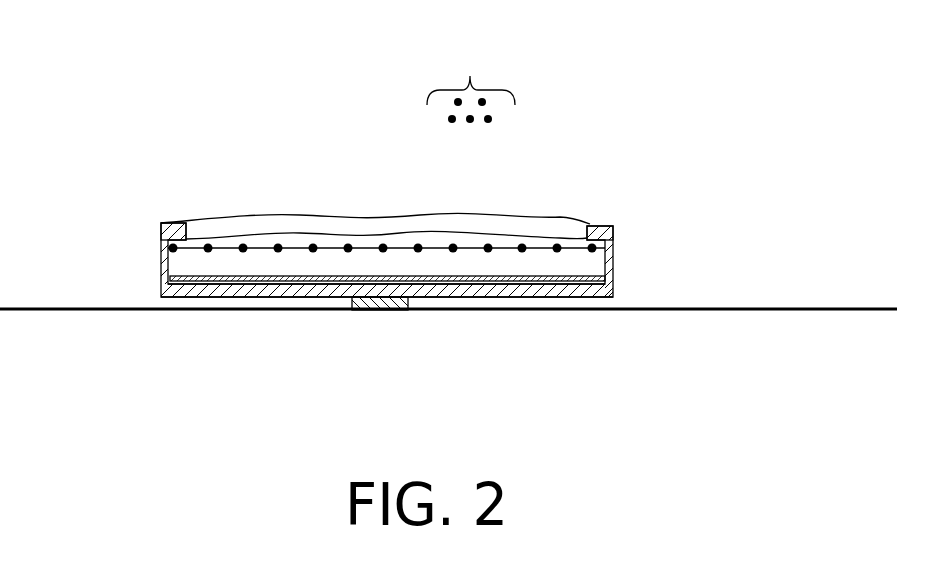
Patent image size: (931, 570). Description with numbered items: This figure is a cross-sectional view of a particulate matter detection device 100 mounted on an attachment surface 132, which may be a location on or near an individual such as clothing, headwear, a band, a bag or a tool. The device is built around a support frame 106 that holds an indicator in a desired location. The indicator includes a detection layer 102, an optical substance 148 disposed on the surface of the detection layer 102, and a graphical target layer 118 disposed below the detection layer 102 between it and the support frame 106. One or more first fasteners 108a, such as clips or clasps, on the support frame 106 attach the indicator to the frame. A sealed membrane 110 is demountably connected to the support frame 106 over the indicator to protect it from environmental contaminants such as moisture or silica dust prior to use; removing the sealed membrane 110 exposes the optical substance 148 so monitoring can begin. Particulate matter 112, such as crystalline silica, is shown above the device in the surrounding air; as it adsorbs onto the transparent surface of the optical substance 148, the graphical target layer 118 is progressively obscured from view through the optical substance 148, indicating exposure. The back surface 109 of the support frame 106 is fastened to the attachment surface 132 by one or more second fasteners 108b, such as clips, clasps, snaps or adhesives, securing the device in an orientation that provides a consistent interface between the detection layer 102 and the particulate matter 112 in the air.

The particulate matter detection device 100 is at (148, 122).
The detection layer 102 is at (281, 282).
The support frame 106 is at (162, 273).
The first fasteners 108a is at (170, 223).
The second fasteners 108b is at (387, 310).
The back surface 109 is at (582, 292).
The sealed membrane 110 is at (560, 217).
The particulate matter 112 is at (470, 76).
The graphical target layer 118 is at (587, 277).
The attachment surface 132 is at (778, 309).
The optical substance 148 is at (281, 282).